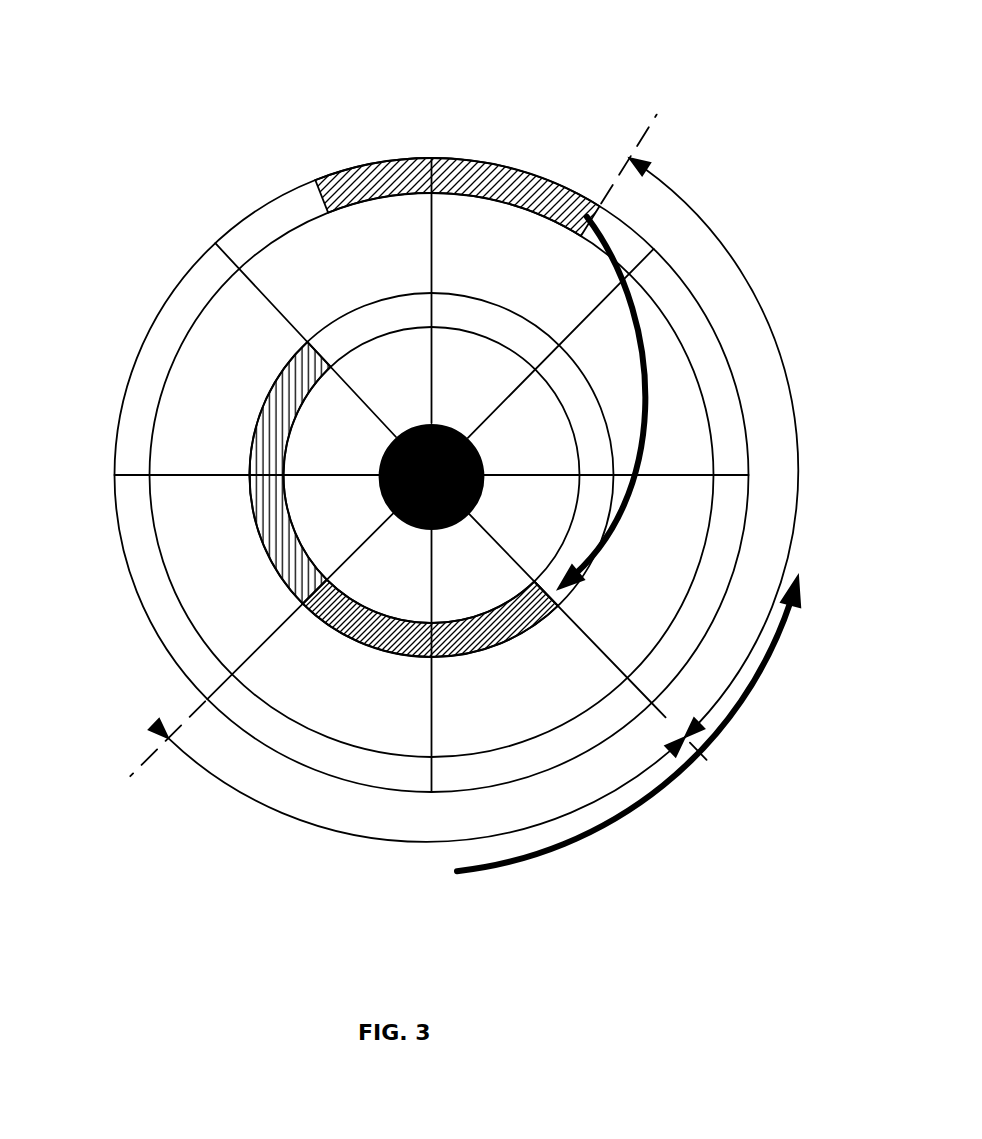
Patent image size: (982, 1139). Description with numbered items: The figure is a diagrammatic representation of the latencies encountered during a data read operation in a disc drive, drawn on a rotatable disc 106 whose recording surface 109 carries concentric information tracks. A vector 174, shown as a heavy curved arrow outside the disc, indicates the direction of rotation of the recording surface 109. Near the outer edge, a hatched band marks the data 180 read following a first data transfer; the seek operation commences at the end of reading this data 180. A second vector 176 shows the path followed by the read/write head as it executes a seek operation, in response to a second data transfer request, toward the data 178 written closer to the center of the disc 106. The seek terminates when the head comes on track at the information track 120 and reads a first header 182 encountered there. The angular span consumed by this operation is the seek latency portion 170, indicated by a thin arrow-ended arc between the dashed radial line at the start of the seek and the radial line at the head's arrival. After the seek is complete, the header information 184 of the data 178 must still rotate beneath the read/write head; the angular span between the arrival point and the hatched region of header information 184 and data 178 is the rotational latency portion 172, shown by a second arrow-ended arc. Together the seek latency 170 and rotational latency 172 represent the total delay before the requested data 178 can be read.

The disc 106 is at (416, 88).
The recording surface 109 is at (188, 378).
The information track 120 is at (387, 320).
The seek latency portion 170 is at (687, 202).
The rotational latency portion 172 is at (430, 842).
The vector 174 is at (680, 793).
The vector 176 is at (648, 403).
The data 178 is at (256, 520).
The data 180 is at (587, 196).
The first header 182 is at (557, 607).
The header information 184 is at (303, 608).